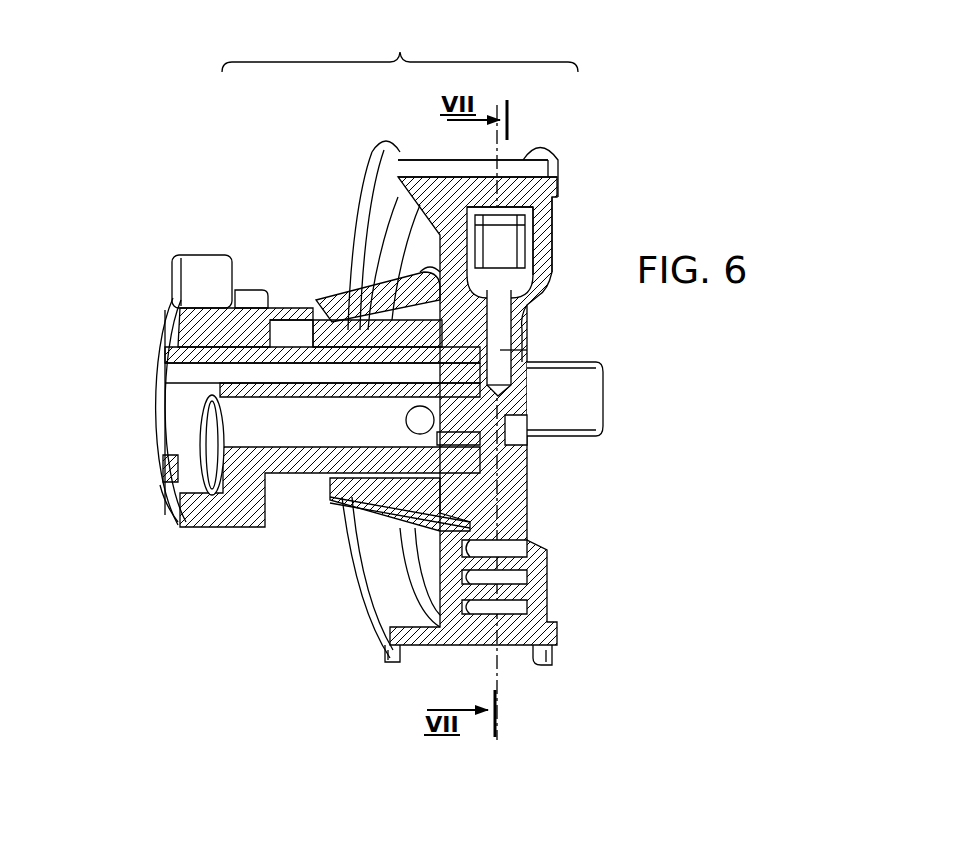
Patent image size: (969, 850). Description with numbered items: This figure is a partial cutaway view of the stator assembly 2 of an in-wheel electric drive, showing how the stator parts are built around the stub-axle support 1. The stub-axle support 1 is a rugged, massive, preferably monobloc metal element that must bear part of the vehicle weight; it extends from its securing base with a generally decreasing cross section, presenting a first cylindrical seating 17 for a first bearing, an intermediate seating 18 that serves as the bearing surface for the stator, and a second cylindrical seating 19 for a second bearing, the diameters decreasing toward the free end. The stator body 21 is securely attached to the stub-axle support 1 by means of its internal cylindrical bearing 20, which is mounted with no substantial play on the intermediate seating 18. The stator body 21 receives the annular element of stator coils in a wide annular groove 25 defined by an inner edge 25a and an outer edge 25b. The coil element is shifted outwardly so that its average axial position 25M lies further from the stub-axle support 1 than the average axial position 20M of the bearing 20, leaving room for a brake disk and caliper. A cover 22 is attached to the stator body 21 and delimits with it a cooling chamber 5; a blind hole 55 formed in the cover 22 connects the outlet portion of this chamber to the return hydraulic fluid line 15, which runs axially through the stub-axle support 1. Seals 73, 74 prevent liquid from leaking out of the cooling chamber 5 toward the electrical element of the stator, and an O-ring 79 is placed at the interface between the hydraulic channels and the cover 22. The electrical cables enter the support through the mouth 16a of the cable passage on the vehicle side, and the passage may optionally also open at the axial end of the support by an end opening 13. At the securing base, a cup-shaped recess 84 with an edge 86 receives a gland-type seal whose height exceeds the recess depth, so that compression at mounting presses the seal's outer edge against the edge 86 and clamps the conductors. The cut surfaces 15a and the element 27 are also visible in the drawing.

The stub-axle support 1 is at (247, 285).
The stator assembly 2 is at (400, 48).
The cooling chamber 5 is at (508, 612).
The end opening 13 is at (603, 408).
The return hydraulic fluid line 15 is at (313, 377).
The housing cover 15a is at (164, 356).
The mouth of the cable passage 16a is at (213, 440).
The first cylindrical seating 17 is at (287, 330).
The intermediate seating 18 is at (334, 495).
The second cylindrical seating 19 is at (547, 424).
The internal cylindrical bearing 20 is at (400, 483).
The average axial position of the bearing 20M is at (516, 331).
The stator body 21 is at (372, 140).
The cover 22 is at (543, 222).
The annular groove 25 is at (430, 160).
The inner edge 25a is at (384, 663).
The outer edge 25b is at (548, 654).
The average axial position of the annular element of coils 25M is at (486, 165).
The sleeve 27 is at (358, 298).
The blind hole 55 is at (543, 302).
The seal 73 is at (535, 200).
The seal 74 is at (493, 298).
The O-ring 79 is at (500, 352).
The cup-shaped recess 84 is at (182, 466).
The edge of the recess 86 is at (155, 497).